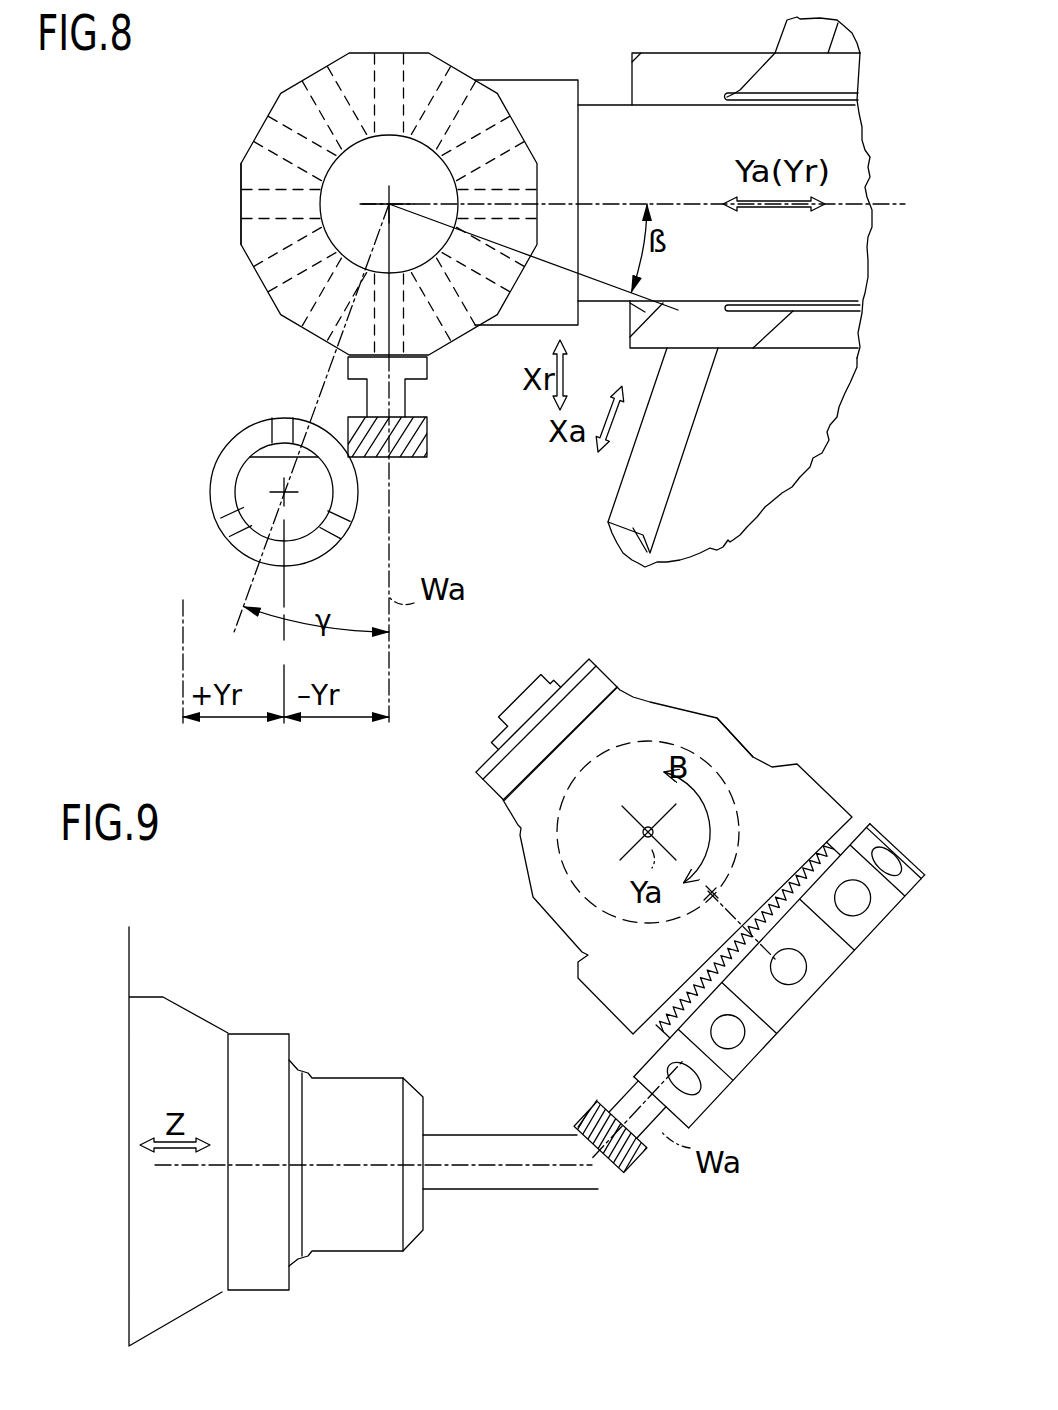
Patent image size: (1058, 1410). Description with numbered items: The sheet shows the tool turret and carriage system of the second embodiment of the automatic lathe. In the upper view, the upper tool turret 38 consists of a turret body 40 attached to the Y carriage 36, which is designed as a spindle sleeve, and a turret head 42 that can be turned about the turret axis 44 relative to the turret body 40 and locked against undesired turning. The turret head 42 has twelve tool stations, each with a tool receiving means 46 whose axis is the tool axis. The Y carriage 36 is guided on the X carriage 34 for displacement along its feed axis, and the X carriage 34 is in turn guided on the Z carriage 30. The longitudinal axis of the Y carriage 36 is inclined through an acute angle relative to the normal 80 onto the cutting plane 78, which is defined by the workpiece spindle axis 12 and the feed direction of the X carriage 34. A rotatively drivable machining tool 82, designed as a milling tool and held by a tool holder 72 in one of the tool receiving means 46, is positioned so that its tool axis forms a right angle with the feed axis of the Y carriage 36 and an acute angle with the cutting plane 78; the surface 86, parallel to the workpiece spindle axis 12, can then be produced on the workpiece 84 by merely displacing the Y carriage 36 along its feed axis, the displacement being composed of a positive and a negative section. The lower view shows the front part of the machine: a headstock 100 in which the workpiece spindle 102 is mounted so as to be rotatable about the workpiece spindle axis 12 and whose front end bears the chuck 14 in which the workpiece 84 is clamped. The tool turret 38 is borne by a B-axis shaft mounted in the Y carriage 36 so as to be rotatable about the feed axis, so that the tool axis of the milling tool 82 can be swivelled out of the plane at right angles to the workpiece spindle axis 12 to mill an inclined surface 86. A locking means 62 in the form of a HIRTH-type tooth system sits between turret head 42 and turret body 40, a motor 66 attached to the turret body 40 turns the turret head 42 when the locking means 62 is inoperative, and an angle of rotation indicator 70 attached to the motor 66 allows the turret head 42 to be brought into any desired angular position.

In FIG. 8, the workpiece spindle axis 12 is at (262, 475).
In FIG. 9, the workpiece spindle axis 12 is at (331, 1168).
In FIG. 8, the chuck 14 is at (362, 515).
In FIG. 9, the chuck 14 is at (370, 1074).
In FIG. 8, the Z carriage 30 is at (603, 542).
In FIG. 8, the X carriage 34 is at (814, 372).
In FIG. 8, the Y carriage 36 is at (683, 102).
In FIG. 9, the Y carriage 36 is at (558, 842).
In FIG. 8, the upper tool turret 38 is at (248, 247).
In FIG. 9, the upper tool turret 38 is at (695, 700).
In FIG. 8, the turret body 40 is at (541, 80).
In FIG. 9, the turret body 40 is at (753, 755).
In FIG. 8, the turret head 42 is at (240, 193).
In FIG. 9, the turret head 42 is at (880, 836).
In FIG. 8, the turret axis 44 is at (382, 200).
In FIG. 9, the turret axis 44 is at (780, 958).
In FIG. 8, the tool receiving means 46 is at (302, 322).
In FIG. 9, the tool receiving means 46 is at (740, 1040).
In FIG. 9, the locking means 62 is at (843, 848).
In FIG. 9, the motor 66 is at (562, 672).
In FIG. 9, the angle of rotation indicator 70 is at (520, 702).
In FIG. 8, the tool holder 72 is at (430, 373).
In FIG. 9, the tool holder 72 is at (693, 1112).
In FIG. 8, the cutting plane 78 is at (250, 580).
In FIG. 8, the normal onto the cutting plane 80 is at (640, 290).
In FIG. 8, the machining tool 82 is at (434, 435).
In FIG. 9, the machining tool 82 is at (646, 1172).
In FIG. 8, the workpiece 84 is at (236, 503).
In FIG. 9, the workpiece 84 is at (478, 1190).
In FIG. 8, the surface 86 is at (270, 443).
In FIG. 9, the surface 86 is at (578, 1124).
In FIG. 9, the headstock 100 is at (140, 965).
In FIG. 9, the workpiece spindle 102 is at (232, 1028).